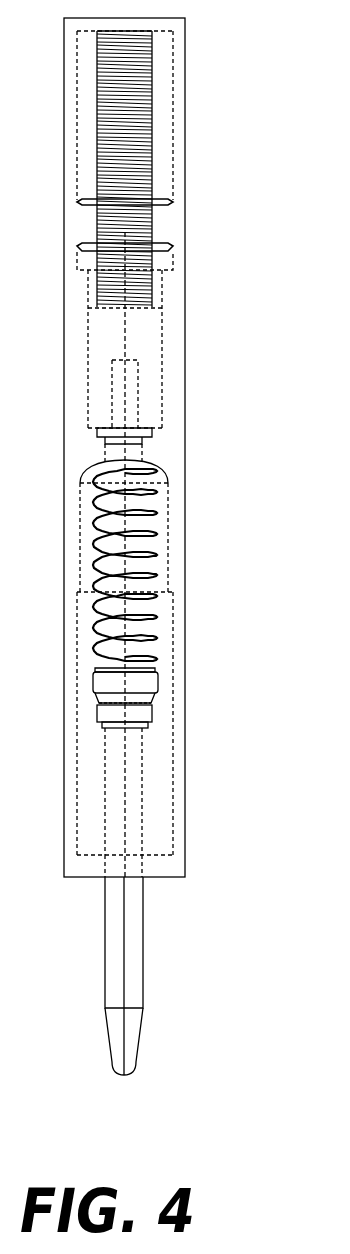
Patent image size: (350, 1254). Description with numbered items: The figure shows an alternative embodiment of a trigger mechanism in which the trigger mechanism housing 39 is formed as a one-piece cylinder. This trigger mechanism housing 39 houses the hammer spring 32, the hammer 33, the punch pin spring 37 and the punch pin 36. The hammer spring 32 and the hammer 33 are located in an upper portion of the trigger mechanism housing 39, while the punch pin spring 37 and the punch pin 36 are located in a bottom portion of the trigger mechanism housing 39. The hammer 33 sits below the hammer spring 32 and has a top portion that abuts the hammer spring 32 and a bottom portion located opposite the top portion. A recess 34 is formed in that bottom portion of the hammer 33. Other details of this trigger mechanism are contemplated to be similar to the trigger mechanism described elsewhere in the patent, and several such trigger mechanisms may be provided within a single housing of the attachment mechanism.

The trigger mechanism housing 39 is at (185, 18).
The hammer spring 32 is at (150, 141).
The hammer 33 is at (150, 340).
The recess 34 is at (132, 392).
The punch pin spring 37 is at (150, 610).
The punch pin 36 is at (140, 940).